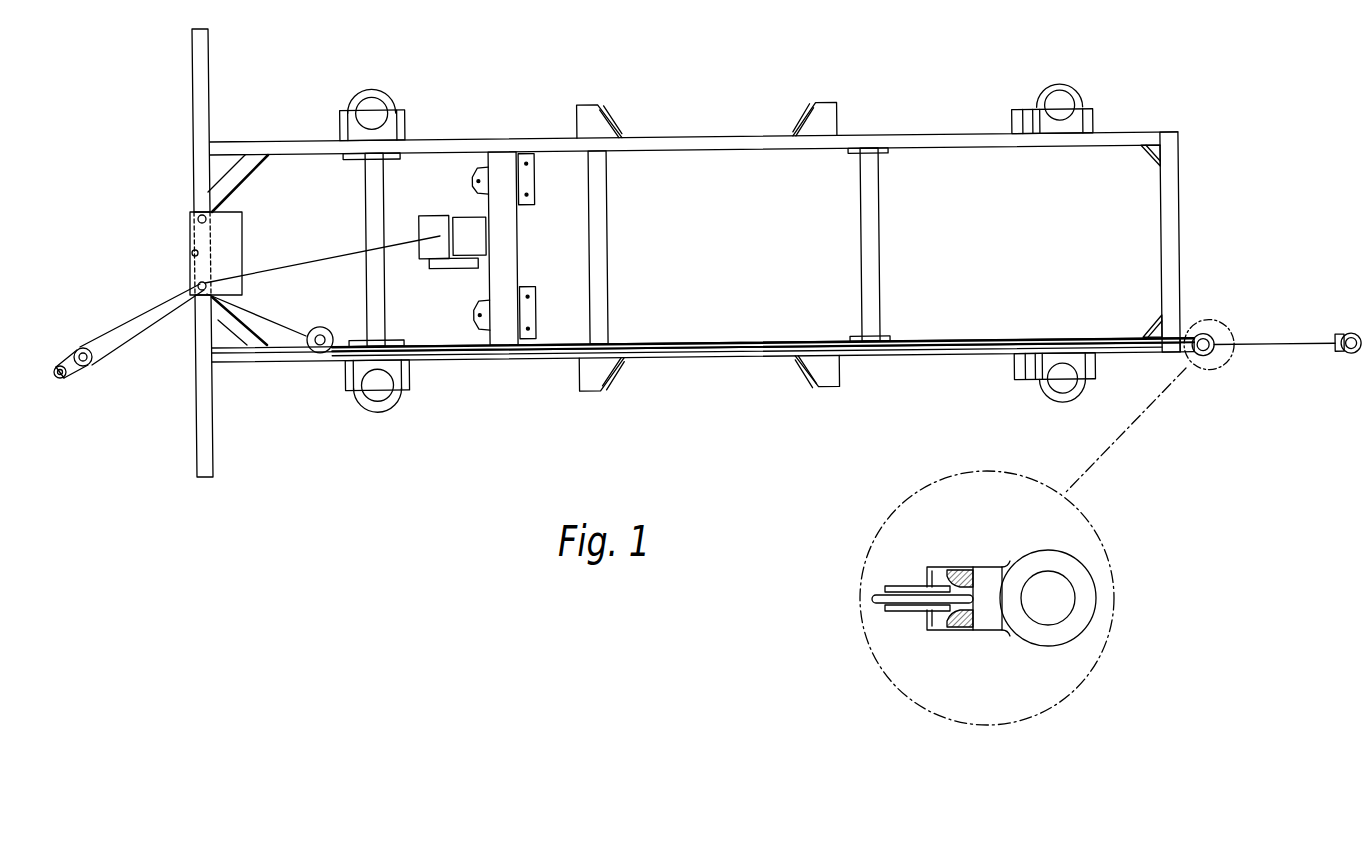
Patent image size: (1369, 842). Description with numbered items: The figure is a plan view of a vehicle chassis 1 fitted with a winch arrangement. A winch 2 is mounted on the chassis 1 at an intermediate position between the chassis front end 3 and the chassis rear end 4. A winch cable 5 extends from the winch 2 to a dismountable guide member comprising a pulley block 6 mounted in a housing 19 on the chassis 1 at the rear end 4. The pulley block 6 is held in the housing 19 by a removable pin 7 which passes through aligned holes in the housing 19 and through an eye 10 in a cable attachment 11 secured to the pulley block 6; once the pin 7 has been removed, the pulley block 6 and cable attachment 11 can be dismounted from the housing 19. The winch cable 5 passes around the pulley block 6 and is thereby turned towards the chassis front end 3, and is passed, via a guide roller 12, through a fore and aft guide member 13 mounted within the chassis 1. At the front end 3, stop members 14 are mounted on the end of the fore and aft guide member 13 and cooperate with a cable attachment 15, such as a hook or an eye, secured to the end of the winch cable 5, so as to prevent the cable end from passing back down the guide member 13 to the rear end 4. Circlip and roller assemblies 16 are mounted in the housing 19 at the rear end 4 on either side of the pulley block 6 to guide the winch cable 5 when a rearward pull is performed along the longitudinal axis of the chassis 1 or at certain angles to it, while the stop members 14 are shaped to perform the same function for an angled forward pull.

The chassis 1 is at (703, 147).
The winch 2 is at (427, 221).
The chassis front end 3 is at (1207, 232).
The chassis rear end 4 is at (157, 168).
The winch cable 5 is at (311, 258).
The pulley block 6 is at (77, 346).
The removable pin 7 is at (191, 253).
The eye 10 is at (60, 378).
The cable attachment 11 is at (77, 368).
The guide roller 12 is at (321, 330).
The fore and aft guide member 13 is at (711, 364).
The stop members 14 is at (963, 570).
The cable attachment 15 is at (1208, 366).
The circlip and roller assemblies 16 is at (197, 219).
The housing 19 is at (227, 228).